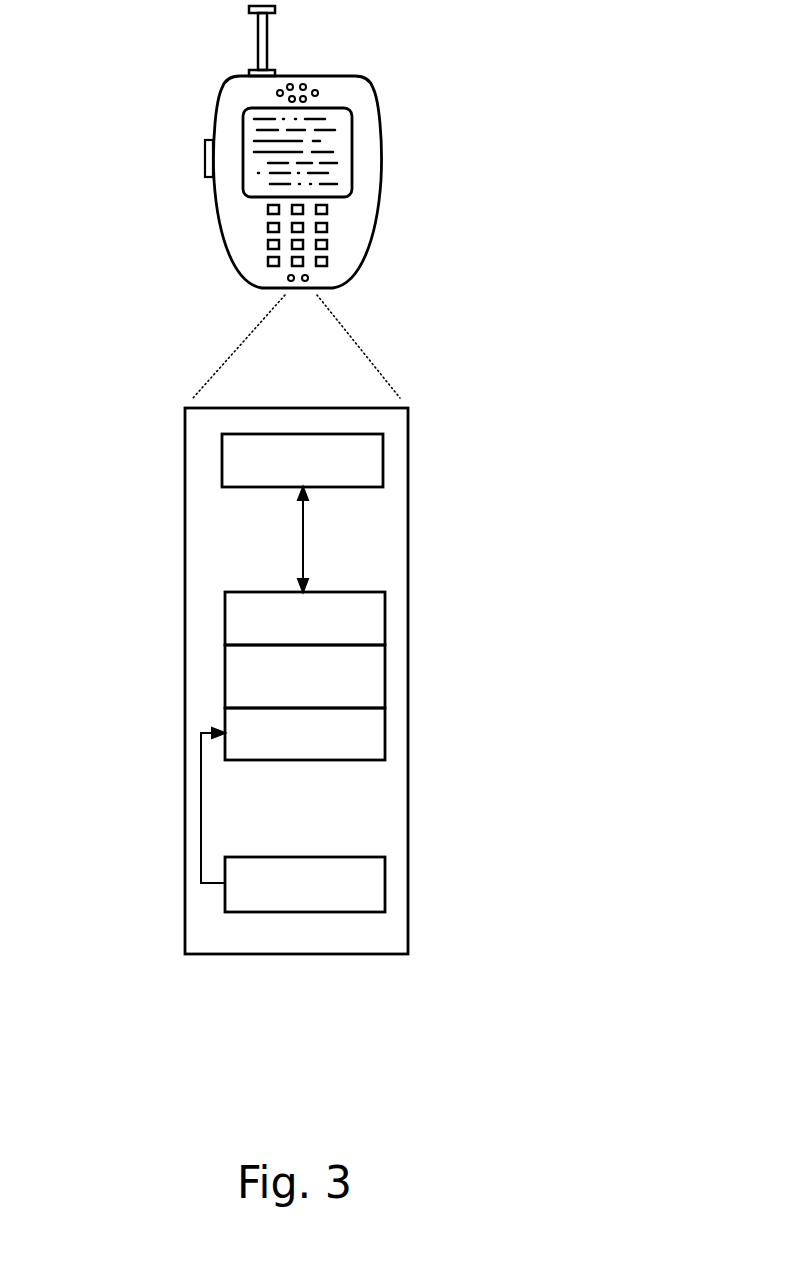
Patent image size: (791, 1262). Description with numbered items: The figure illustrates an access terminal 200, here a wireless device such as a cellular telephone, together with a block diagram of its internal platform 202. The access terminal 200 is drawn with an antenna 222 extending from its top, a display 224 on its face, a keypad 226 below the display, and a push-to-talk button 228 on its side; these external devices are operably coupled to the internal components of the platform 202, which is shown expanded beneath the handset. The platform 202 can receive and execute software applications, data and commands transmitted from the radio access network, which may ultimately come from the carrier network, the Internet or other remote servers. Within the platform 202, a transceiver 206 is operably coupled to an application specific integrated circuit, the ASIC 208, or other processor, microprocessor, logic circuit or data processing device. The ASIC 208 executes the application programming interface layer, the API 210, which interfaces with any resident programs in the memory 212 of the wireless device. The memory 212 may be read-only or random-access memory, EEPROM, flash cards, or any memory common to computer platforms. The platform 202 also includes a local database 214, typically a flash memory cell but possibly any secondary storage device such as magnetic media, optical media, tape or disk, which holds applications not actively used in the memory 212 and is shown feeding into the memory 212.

The access terminal 200 is at (358, 267).
The platform 202 is at (185, 593).
The transceiver 206 is at (383, 460).
The application specific integrated circuit 208 is at (385, 625).
The application programming interface 210 is at (385, 672).
The memory 212 is at (385, 733).
The local database 214 is at (385, 867).
The antenna 222 is at (267, 20).
The display 224 is at (352, 138).
The keypad 226 is at (327, 227).
The push-to-talk button 228 is at (205, 149).